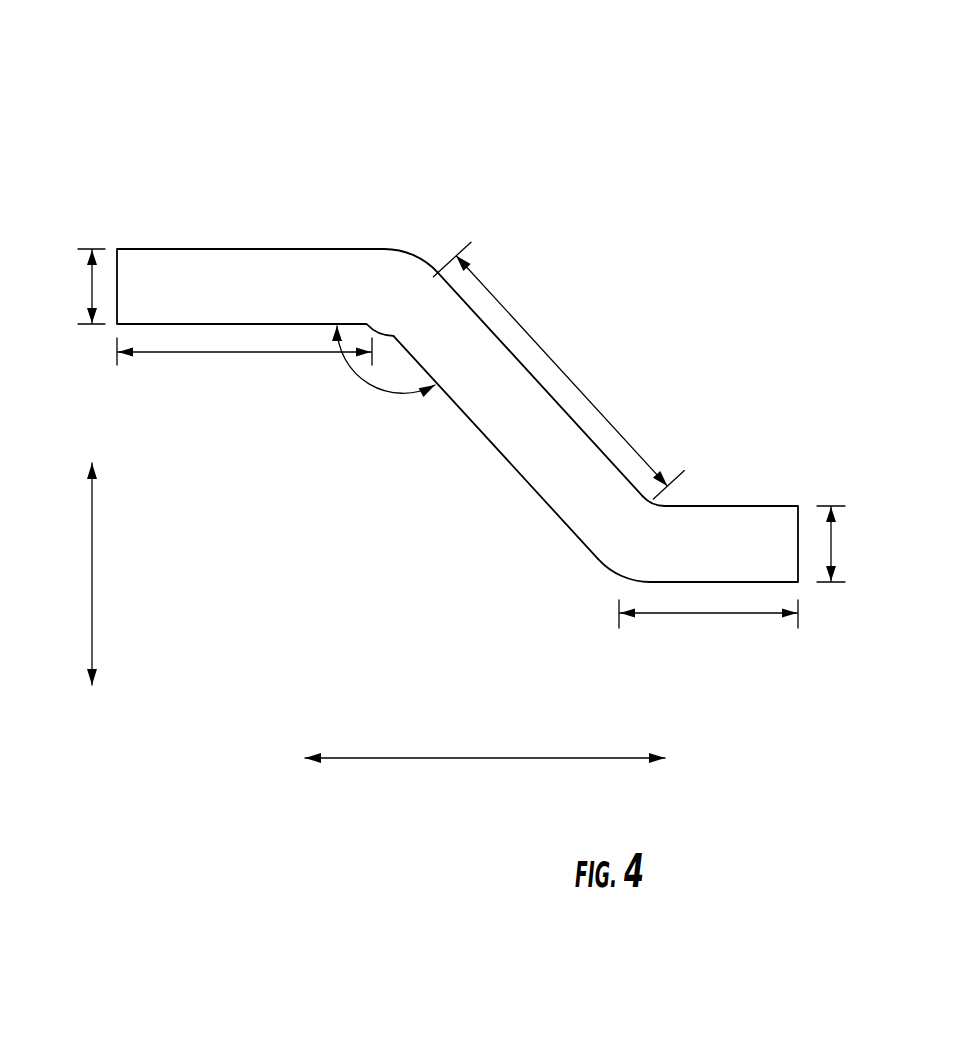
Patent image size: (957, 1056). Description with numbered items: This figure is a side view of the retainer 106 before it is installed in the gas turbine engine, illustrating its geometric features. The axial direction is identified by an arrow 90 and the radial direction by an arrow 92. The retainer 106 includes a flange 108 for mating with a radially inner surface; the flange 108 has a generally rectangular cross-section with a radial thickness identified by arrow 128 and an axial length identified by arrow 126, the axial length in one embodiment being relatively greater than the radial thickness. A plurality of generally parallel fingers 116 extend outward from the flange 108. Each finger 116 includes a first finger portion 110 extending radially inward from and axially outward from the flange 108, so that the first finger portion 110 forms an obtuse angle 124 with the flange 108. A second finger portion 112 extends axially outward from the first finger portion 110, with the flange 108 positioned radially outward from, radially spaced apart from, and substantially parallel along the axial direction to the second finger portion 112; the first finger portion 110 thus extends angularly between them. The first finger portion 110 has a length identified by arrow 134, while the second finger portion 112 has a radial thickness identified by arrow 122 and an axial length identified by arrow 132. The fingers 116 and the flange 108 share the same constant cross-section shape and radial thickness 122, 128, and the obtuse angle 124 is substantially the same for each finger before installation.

The retainer 106 is at (450, 316).
The flange 108 is at (252, 282).
The first finger portion 110 is at (523, 420).
The second finger portion 112 is at (748, 520).
The fingers 116 is at (737, 305).
The radial thickness of second finger portion 122 is at (832, 542).
The obtuse angle 124 is at (383, 393).
The axial length of flange 126 is at (246, 353).
The radial thickness of flange 128 is at (92, 278).
The axial length of second finger portion 132 is at (718, 614).
The length of first finger portion 134 is at (611, 423).
The axial direction arrow 90 is at (450, 757).
The radial direction arrow 92 is at (95, 565).